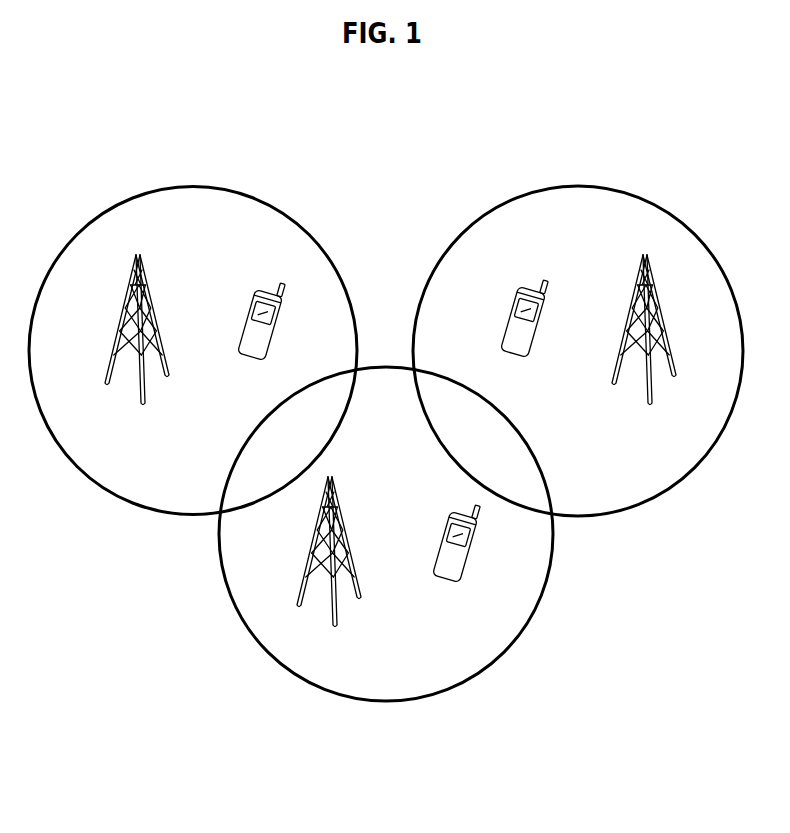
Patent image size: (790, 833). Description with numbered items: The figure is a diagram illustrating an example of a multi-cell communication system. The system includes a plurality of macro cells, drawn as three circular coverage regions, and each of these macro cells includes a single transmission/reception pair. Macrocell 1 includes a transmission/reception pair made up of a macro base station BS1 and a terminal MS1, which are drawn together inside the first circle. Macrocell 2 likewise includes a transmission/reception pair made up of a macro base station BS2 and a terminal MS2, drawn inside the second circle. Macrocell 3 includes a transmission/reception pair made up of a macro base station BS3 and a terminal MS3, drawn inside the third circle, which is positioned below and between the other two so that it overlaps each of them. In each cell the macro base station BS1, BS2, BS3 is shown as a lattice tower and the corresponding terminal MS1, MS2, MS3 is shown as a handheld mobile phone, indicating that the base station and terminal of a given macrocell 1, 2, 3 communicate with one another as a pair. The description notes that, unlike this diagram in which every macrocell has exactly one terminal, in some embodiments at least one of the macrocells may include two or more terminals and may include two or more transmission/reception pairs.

The macrocell 1 is at (192, 185).
The macrocell 2 is at (575, 185).
The macrocell 3 is at (387, 703).
The macro base station BS1 is at (137, 348).
The macro base station BS2 is at (644, 347).
The macro base station BS3 is at (329, 570).
The terminal MS1 is at (259, 335).
The terminal MS2 is at (524, 335).
The terminal MS3 is at (454, 559).